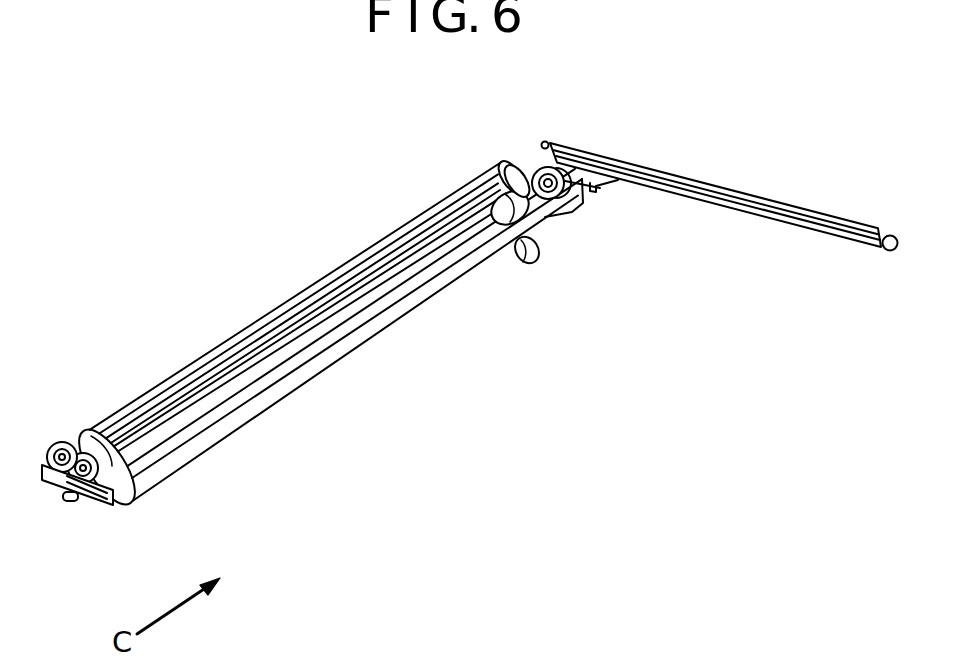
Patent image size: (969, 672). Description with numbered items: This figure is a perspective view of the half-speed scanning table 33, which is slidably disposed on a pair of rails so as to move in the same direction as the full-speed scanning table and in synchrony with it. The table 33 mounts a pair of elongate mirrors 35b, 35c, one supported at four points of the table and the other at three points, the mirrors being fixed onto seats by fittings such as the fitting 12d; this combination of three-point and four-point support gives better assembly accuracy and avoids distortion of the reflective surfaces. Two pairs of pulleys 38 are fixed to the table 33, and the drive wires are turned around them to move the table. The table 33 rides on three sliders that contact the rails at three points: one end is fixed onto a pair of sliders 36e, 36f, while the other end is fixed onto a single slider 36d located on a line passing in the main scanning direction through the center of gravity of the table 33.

The half-speed scanning table 33 is at (362, 115).
The elongate mirror 35b is at (262, 318).
The elongate mirror 35c is at (377, 347).
The fitting 12d is at (108, 420).
The pulley 38 is at (57, 441).
The slider 36d is at (70, 507).
The slider 36e is at (543, 140).
The slider 36f is at (891, 236).